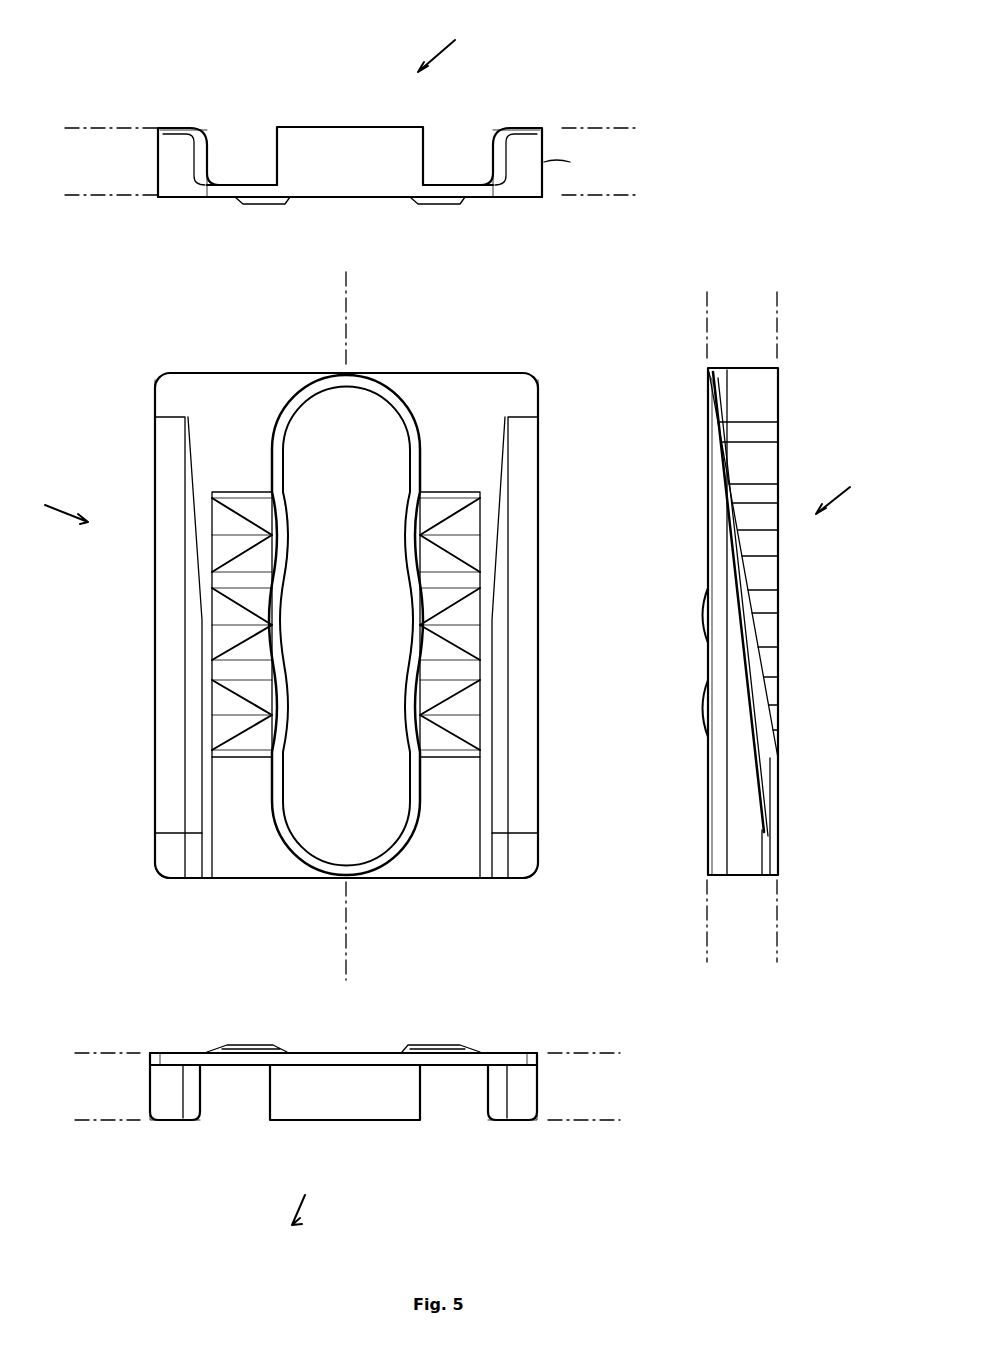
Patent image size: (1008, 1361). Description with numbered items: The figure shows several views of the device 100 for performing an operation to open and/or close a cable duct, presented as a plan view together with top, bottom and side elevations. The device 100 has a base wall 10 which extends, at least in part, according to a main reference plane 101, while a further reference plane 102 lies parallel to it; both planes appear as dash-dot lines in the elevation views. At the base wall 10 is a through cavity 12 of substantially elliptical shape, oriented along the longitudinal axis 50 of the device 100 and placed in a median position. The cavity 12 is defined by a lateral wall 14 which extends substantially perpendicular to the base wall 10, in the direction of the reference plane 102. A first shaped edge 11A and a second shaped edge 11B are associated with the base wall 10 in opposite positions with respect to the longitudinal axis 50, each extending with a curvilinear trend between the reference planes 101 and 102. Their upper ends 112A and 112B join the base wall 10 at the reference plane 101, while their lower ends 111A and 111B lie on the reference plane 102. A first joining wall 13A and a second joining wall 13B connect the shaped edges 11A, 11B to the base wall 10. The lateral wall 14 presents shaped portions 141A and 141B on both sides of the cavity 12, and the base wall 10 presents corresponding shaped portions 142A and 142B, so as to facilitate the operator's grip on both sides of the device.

The device 100 is at (450, 637).
The base wall 10 is at (347, 200).
The first shaped edge 11A is at (160, 620).
The second shaped edge 11B is at (155, 155).
The second end of first shaped edge 111A is at (512, 125).
The second end of second shaped edge 111B is at (173, 125).
The first end of first shaped edge 112A is at (515, 200).
The first end of second shaped edge 112B is at (168, 200).
The through cavity 12 is at (352, 444).
The first joining wall 13A is at (490, 150).
The second joining wall 13B is at (210, 150).
The lateral wall 14 is at (343, 145).
The shaped portion of lateral wall 141A is at (290, 565).
The shaped portion of lateral wall 141B is at (390, 640).
The shaped portion of base wall 142A is at (432, 206).
The shaped portion of base wall 142B is at (258, 206).
The main reference plane 101 is at (622, 205).
The further reference plane 102 is at (617, 125).
The longitudinal axis 50 is at (349, 922).